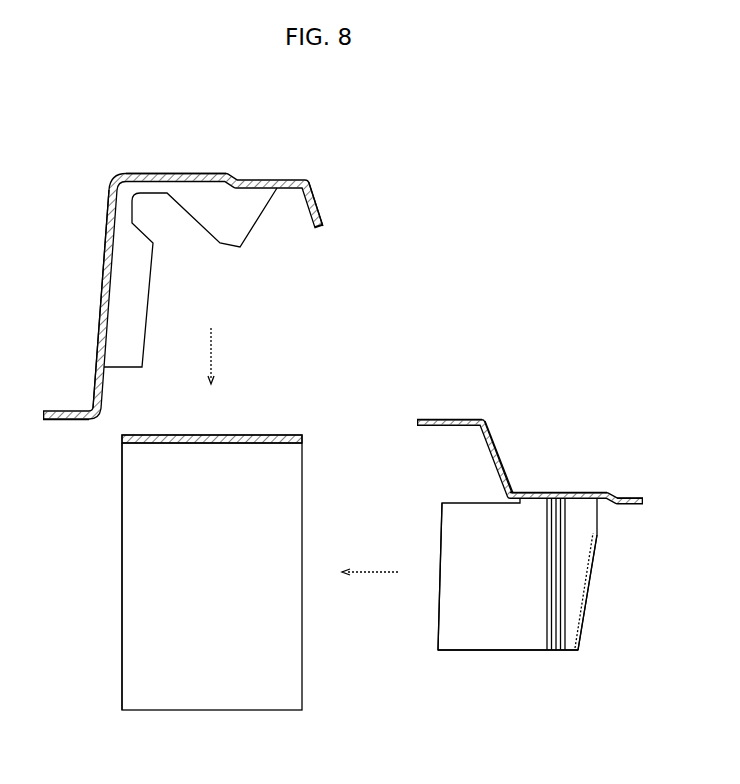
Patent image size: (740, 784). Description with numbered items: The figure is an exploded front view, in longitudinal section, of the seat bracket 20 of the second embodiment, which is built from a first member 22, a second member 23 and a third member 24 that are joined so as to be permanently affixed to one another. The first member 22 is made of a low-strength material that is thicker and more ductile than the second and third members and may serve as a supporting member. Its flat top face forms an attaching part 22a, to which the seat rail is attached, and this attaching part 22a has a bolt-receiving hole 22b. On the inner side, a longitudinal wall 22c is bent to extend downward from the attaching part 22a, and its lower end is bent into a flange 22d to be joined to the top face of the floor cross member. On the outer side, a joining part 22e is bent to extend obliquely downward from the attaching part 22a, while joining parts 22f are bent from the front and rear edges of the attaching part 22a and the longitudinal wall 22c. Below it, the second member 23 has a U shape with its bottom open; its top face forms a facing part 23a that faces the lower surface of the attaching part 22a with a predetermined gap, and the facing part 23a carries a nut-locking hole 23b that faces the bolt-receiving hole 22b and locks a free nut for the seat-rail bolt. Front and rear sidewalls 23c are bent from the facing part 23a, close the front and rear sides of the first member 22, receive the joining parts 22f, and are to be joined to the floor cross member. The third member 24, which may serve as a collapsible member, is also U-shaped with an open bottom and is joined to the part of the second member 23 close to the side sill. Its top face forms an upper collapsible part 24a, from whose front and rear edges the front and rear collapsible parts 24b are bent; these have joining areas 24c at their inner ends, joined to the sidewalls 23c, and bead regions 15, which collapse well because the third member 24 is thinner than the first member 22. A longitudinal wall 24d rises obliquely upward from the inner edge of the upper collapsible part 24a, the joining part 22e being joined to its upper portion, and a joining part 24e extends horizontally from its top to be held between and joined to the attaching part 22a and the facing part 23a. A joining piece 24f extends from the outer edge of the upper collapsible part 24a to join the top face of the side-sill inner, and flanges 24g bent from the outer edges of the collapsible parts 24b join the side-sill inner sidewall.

The seat bracket 20 is at (427, 266).
The first member 22 is at (90, 212).
The attaching part 22a is at (207, 175).
The bolt-receiving hole 22b is at (160, 173).
The longitudinal wall 22c is at (103, 258).
The flange 22d is at (63, 410).
The joining part 22e is at (320, 200).
The joining parts 22f is at (230, 237).
The second member 23 is at (94, 559).
The facing part 23a is at (255, 433).
The nut-locking hole 23b is at (167, 443).
The front and rear sidewalls 23c is at (127, 598).
The third member 24 is at (532, 449).
The upper collapsible part 24a is at (577, 492).
The front and rear collapsible parts 24b is at (518, 630).
The joining areas 24c is at (448, 625).
The longitudinal wall 24d is at (495, 470).
The joining part 24e is at (447, 418).
The joining piece 24f is at (630, 497).
The flanges 24g is at (592, 592).
The bead region 15 is at (547, 570).